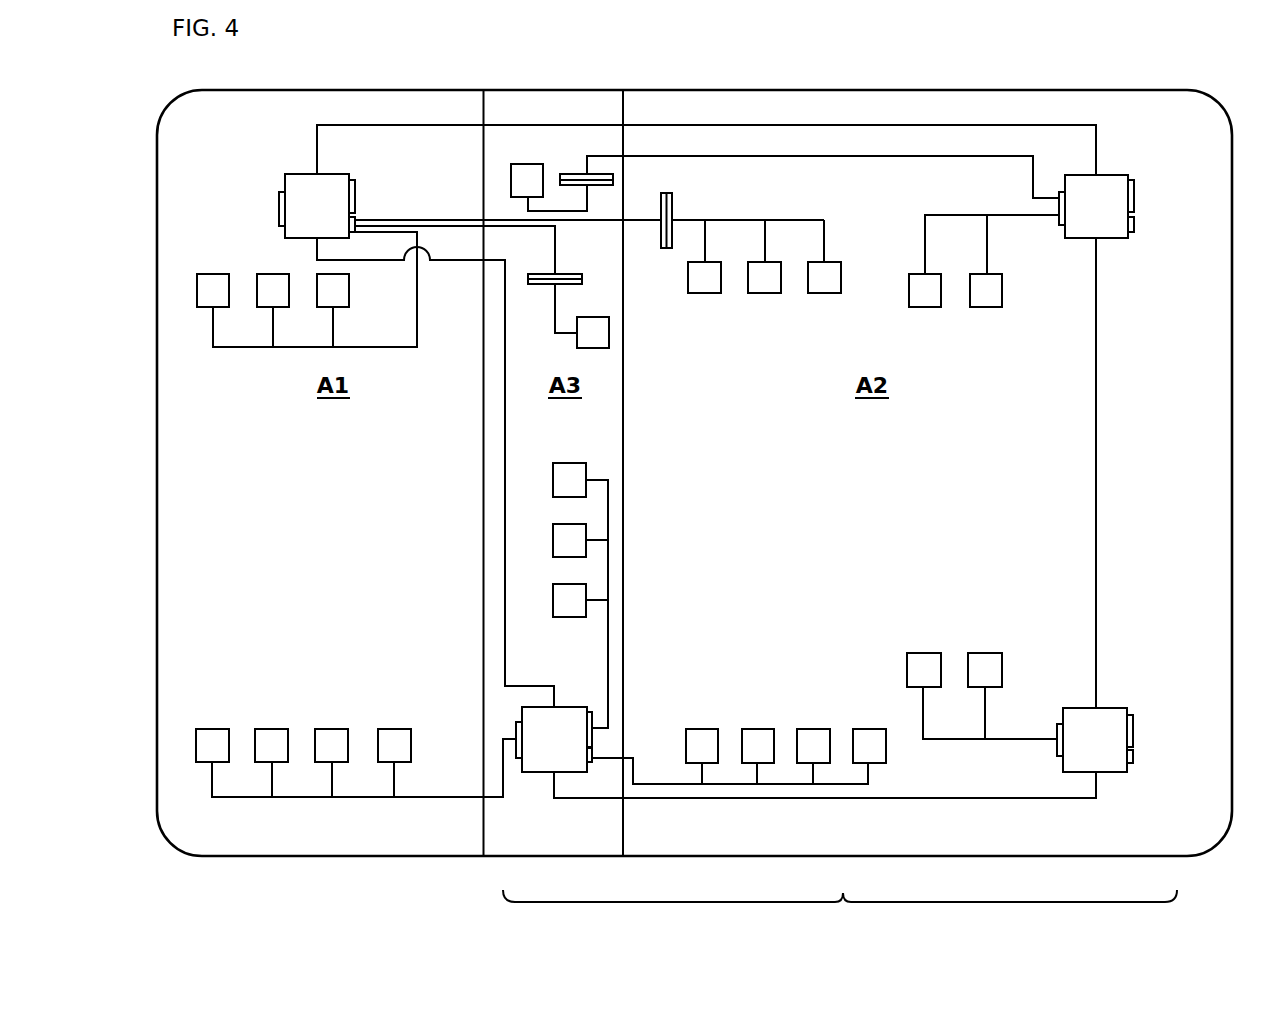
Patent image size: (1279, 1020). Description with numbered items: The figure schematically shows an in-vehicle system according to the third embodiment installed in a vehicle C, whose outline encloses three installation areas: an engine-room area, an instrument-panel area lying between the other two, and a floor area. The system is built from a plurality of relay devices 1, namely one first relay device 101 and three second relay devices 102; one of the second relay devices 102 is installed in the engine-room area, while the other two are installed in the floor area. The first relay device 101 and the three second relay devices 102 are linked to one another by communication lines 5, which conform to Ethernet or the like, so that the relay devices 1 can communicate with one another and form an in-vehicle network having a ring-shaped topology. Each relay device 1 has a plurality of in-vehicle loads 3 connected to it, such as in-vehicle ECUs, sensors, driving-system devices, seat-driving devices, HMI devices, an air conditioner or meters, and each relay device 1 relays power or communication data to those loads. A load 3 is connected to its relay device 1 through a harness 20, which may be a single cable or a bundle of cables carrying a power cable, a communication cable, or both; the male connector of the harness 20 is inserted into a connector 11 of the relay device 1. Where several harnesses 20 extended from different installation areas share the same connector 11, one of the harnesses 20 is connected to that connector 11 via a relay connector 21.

The relay device 1 is at (840, 917).
The first relay device 101 is at (538, 772).
The second relay device 102 is at (303, 173).
The in-vehicle load 3 is at (213, 274).
The communication line 5 is at (889, 125).
The connector 11 is at (279, 207).
The harness 20 is at (242, 347).
The relay connector 21 is at (576, 174).
The vehicle C is at (1232, 390).